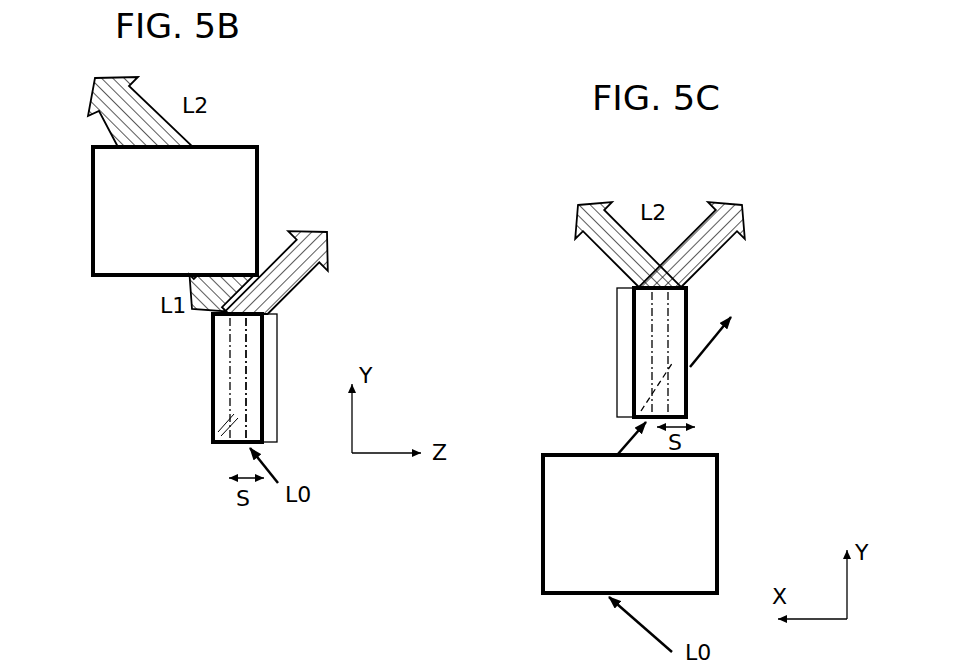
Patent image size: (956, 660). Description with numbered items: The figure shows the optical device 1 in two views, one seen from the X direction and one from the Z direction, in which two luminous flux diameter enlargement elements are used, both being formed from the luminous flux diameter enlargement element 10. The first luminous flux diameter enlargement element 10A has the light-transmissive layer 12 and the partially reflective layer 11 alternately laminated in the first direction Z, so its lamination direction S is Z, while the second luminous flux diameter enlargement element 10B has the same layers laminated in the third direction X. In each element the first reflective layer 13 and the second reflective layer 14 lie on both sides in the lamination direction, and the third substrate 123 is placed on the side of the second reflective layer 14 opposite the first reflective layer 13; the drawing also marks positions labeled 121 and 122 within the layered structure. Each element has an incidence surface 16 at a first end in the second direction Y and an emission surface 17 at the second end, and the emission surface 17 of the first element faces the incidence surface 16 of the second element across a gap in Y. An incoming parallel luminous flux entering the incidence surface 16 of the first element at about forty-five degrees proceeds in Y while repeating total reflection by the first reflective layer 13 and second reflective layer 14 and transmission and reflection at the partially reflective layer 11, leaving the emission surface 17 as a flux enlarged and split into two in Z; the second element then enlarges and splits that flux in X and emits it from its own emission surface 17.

In FIG. 5B, the optical device 1 is at (330, 165).
In FIG. 5C, the optical device 1 is at (749, 165).
In FIG. 5B, the luminous flux diameter enlargement element 10 is at (140, 294).
In FIG. 5C, the luminous flux diameter enlargement element 10 is at (696, 440).
In FIG. 5B, the first luminous flux diameter enlargement element 10A is at (211, 368).
In FIG. 5C, the first luminous flux diameter enlargement element 10A is at (721, 500).
In FIG. 5B, the second luminous flux diameter enlargement element 10B is at (104, 279).
In FIG. 5C, the second luminous flux diameter enlargement element 10B is at (750, 393).
In FIG. 5B, the partially reflective layer 11 is at (250, 333).
In FIG. 5C, the partially reflective layer 11 is at (625, 310).
In FIG. 5B, the light-transmissive layer 12 is at (226, 414).
In FIG. 5C, the light-transmissive layer 12 is at (645, 362).
In FIG. 5B, the first reflective layer 13 is at (214, 390).
In FIG. 5C, the first reflective layer 13 is at (688, 383).
In FIG. 5B, the second reflective layer 14 is at (93, 205).
In FIG. 5C, the second reflective layer 14 is at (633, 302).
In FIG. 5B, the incidence surface 16 is at (160, 276).
In FIG. 5C, the incidence surface 16 is at (631, 415).
In FIG. 5B, the emission surface 17 is at (222, 147).
In FIG. 5C, the emission surface 17 is at (686, 297).
In FIG. 5B, the first reflecting surface 121 is at (226, 384).
In FIG. 5C, the first reflecting surface 121 is at (688, 412).
In FIG. 5B, the second reflecting surface 122 is at (246, 362).
In FIG. 5C, the second reflecting surface 122 is at (660, 325).
In FIG. 5B, the third substrate 123 is at (267, 420).
In FIG. 5C, the third substrate 123 is at (619, 342).